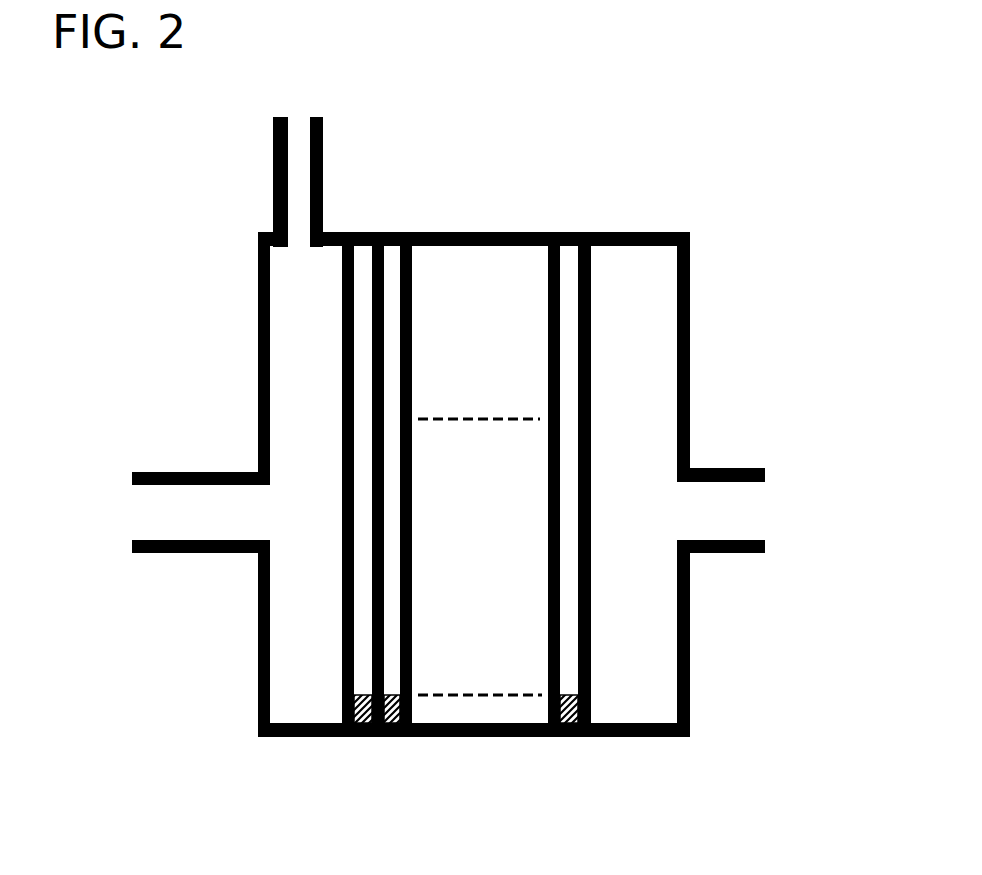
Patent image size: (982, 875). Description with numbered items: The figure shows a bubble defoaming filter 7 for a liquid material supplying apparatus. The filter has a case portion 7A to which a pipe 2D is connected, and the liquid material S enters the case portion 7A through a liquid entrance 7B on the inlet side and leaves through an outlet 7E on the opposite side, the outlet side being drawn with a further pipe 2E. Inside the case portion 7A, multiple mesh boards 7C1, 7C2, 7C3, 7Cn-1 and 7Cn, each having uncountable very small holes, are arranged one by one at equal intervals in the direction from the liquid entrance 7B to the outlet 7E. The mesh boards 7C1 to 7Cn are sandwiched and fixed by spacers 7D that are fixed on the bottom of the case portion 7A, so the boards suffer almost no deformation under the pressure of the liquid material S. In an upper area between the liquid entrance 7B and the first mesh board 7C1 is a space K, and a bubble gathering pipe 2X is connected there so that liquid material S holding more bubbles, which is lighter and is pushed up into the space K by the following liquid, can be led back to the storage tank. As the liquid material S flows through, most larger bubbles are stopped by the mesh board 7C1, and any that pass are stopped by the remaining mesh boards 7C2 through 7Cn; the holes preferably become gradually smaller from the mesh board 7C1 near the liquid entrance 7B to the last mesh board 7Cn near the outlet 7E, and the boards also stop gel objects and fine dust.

The bubble defoaming filter 7 is at (697, 204).
The case portion 7A is at (480, 230).
The bubble gathering pipe 2X is at (323, 162).
The space K is at (313, 282).
The pipe 2D is at (218, 472).
The outlet pipe 2E is at (718, 468).
The liquid entrance 7B is at (267, 508).
The outlet 7E is at (690, 508).
The mesh board 7C1 is at (343, 598).
The mesh board 7C2 is at (372, 635).
The mesh board 7C3 is at (412, 660).
The mesh board 7Cn-1 is at (550, 635).
The mesh board 7Cn is at (590, 665).
The spacers 7D is at (391, 725).
The liquid material S is at (186, 513).